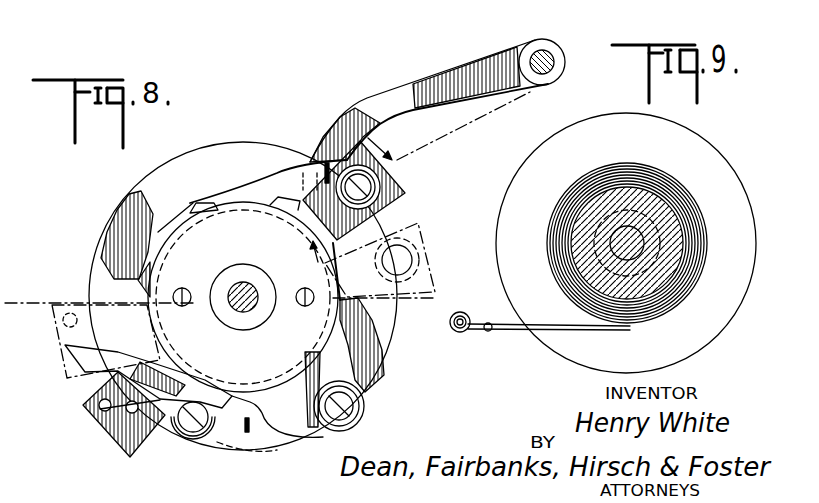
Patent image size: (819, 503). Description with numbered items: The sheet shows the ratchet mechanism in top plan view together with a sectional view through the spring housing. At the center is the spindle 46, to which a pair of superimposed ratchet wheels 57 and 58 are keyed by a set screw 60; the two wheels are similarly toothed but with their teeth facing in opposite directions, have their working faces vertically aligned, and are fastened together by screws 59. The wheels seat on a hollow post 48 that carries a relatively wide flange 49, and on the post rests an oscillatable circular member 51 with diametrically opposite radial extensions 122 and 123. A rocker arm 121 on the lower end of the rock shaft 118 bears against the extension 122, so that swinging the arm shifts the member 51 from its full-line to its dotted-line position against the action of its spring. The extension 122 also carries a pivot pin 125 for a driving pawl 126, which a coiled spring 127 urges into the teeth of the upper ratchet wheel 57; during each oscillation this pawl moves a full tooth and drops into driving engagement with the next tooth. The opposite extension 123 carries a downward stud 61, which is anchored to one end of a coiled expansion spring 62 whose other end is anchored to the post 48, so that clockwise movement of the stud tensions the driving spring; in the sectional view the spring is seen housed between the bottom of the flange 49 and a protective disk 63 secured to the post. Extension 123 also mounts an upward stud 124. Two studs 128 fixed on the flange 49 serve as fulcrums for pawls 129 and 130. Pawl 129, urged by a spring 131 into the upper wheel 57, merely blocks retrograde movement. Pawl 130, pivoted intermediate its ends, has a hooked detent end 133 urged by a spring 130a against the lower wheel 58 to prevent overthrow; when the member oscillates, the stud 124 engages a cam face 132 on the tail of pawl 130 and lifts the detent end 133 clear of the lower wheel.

In FIG. 8, the spindle 46 is at (250, 287).
In FIG. 9, the hollow post 48 is at (592, 218).
In FIG. 8, the flange 49 is at (100, 247).
In FIG. 9, the flange 49 is at (622, 245).
In FIG. 8, the oscillatable circular member 51 is at (128, 203).
In FIG. 8, the upper ratchet wheel 57 is at (223, 227).
In FIG. 8, the lower ratchet wheel 58 is at (205, 200).
In FIG. 8, the screws 59 is at (190, 296).
In FIG. 8, the set screw 60 is at (275, 312).
In FIG. 8, the stud 61 is at (100, 409).
In FIG. 9, the stud 61 is at (463, 328).
In FIG. 9, the coiled expansion spring 62 is at (672, 305).
In FIG. 9, the protective disk 63 is at (520, 162).
In FIG. 8, the rock shaft 118 is at (535, 52).
In FIG. 8, the rocker arm 121 is at (408, 82).
In FIG. 8, the radial extension 122 is at (395, 220).
In FIG. 8, the radial extension 123 is at (132, 445).
In FIG. 8, the stud 124 is at (90, 426).
In FIG. 8, the pivot pin 125 is at (378, 184).
In FIG. 8, the driving pawl 126 is at (285, 172).
In FIG. 8, the coiled spring 127 is at (400, 195).
In FIG. 8, the studs 128 is at (347, 410).
In FIG. 8, the pawl 129 is at (355, 333).
In FIG. 8, the pawl 130 is at (140, 440).
In FIG. 8, the spring 130a is at (247, 434).
In FIG. 8, the spring 131 is at (365, 396).
In FIG. 8, the cam face 132 is at (82, 378).
In FIG. 8, the hooked detent end 133 is at (262, 412).